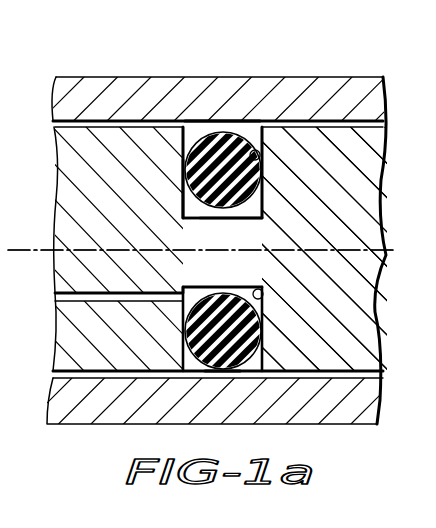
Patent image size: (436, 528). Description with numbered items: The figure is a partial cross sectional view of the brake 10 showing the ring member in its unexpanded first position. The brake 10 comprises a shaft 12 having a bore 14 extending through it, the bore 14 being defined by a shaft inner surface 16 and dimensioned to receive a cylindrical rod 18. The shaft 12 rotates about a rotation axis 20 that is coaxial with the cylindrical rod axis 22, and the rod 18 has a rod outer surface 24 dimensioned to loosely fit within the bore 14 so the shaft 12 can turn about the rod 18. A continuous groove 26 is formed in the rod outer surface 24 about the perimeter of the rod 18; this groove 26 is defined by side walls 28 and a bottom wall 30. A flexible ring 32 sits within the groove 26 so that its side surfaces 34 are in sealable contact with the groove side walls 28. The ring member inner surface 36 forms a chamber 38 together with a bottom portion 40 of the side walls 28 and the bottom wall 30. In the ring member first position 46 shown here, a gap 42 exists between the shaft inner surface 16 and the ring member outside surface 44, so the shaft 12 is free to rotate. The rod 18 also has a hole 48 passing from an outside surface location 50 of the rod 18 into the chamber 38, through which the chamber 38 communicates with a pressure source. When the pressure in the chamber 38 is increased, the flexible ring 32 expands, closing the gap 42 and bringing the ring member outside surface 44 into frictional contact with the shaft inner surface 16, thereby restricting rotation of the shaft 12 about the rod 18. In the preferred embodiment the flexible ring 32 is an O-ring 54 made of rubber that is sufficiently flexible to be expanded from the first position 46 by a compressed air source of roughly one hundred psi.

The brake 10 is at (112, 51).
The shaft 12 is at (385, 96).
The bore 14 is at (362, 399).
The shaft inner surface 16 is at (321, 128).
The cylindrical rod 18 is at (68, 170).
The rotation axis 20 is at (201, 224).
The cylindrical rod axis 22 is at (43, 224).
The rod outer surface 24 is at (62, 384).
The groove 26 is at (254, 131).
The side walls 28 is at (260, 155).
The bottom wall 30 is at (182, 224).
The flexible ring 32 is at (239, 249).
The side surfaces 34 is at (182, 157).
The ring member inner surface 36 is at (231, 210).
The chamber 38 is at (265, 208).
The bottom portion 40 is at (180, 196).
The gap 42 is at (228, 126).
The ring member outside surface 44 is at (217, 374).
The ring member first position 46 is at (201, 120).
The hole 48 is at (117, 292).
The outside surface location 50 is at (50, 296).
The O-ring 54 is at (262, 314).